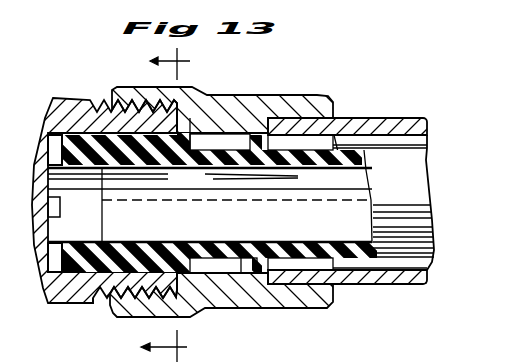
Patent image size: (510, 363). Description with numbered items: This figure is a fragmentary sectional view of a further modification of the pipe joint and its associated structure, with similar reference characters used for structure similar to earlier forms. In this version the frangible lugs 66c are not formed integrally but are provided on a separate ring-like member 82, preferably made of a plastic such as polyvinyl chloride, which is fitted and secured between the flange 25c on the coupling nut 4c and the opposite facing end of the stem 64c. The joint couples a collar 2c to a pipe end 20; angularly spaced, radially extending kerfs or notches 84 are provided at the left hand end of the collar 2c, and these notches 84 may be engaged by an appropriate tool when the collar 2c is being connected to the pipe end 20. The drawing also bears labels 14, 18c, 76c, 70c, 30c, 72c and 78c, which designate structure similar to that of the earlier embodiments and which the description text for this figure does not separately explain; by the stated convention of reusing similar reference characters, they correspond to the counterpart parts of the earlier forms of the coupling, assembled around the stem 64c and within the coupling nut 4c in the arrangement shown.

The section line 14 is at (165, 205).
The nut 18c is at (90, 104).
The coupling nut 4c is at (273, 107).
The flange 76c is at (370, 130).
The frangible lugs 66c is at (187, 140).
The flange 25c is at (160, 178).
The washer 70c is at (241, 270).
The collar 2c is at (110, 168).
The inner sleeve 30c is at (106, 183).
The sleeve 72c is at (290, 176).
The insert 78c is at (330, 198).
The kerfs or notches 84 is at (55, 252).
The ring-like member 82 is at (192, 117).
The stem 64c is at (80, 290).
The pipe end 20 is at (410, 190).